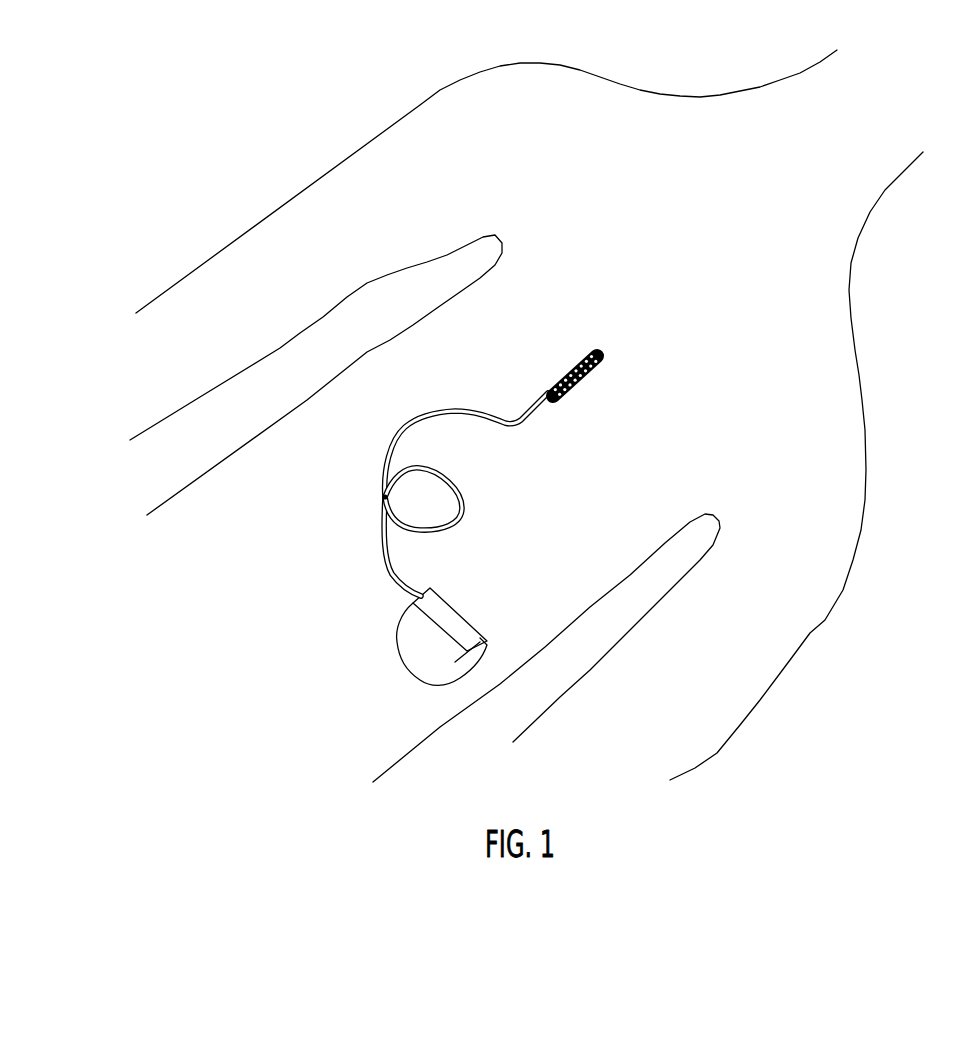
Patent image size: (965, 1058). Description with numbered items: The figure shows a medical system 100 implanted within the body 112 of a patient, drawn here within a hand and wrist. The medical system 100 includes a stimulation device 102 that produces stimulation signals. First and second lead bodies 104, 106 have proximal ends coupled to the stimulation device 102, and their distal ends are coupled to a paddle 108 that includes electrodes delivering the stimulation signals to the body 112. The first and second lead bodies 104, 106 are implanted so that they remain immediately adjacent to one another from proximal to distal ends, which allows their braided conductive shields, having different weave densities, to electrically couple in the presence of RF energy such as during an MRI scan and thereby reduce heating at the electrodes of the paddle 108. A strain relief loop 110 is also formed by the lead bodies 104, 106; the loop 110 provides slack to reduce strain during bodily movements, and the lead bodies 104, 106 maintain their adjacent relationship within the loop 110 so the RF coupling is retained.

The medical system 100 is at (328, 632).
The stimulation device 102 is at (488, 640).
The first lead body 104 is at (390, 567).
The second lead body 106 is at (385, 562).
The paddle 108 is at (598, 354).
The strain relief loop 110 is at (378, 496).
The body 112 is at (774, 368).